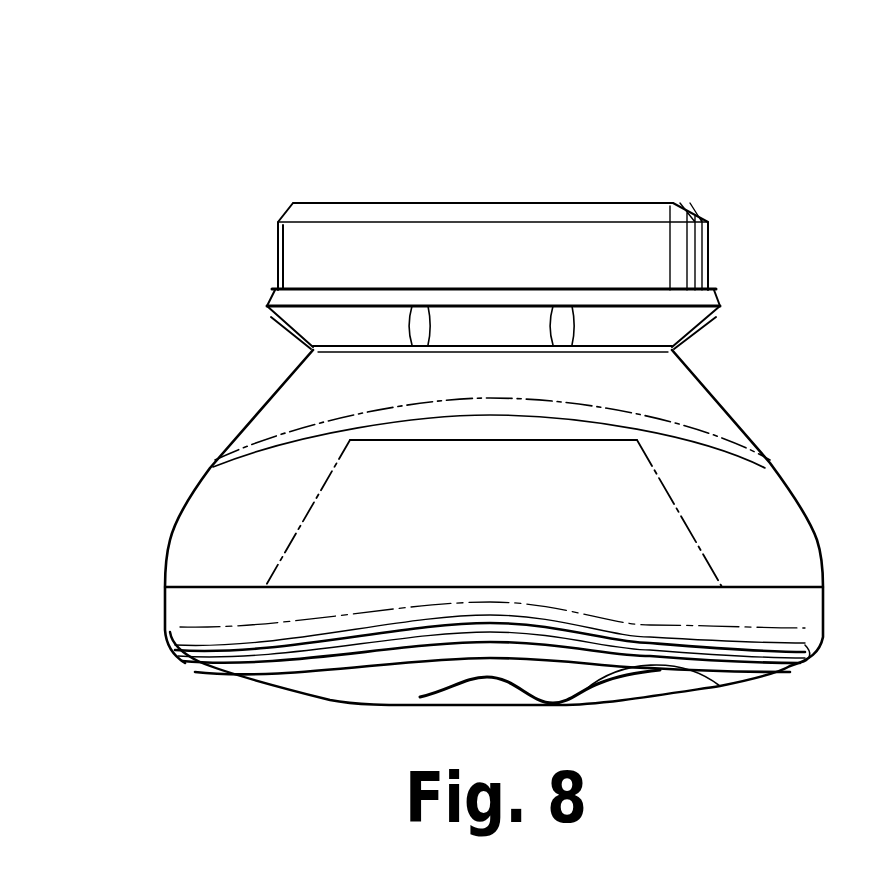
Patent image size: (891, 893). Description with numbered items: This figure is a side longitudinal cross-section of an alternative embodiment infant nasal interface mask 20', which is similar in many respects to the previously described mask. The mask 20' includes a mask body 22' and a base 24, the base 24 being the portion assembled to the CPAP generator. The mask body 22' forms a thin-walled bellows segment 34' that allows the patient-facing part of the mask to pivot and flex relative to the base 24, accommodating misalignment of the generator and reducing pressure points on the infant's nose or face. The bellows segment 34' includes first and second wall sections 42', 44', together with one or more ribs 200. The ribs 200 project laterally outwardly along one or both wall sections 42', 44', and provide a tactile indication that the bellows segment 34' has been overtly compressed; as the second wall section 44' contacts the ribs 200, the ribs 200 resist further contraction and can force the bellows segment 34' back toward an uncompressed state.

The rib 200 is at (313, 356).
The base 24 is at (423, 215).
The first wall section 42' is at (651, 233).
The infant nasal interface mask 20' is at (485, 471).
The bellows segment 34' is at (425, 339).
The mask body 22' is at (505, 462).
The second wall section 44' is at (537, 426).